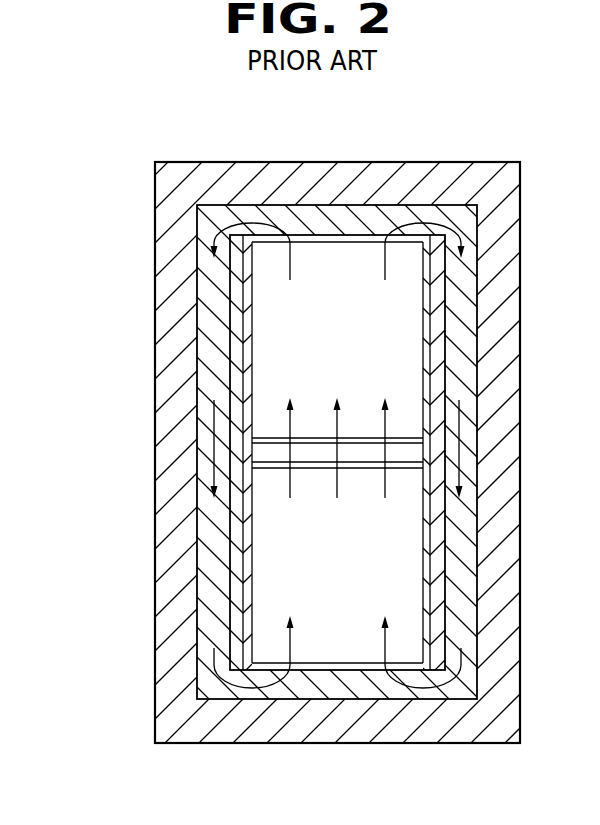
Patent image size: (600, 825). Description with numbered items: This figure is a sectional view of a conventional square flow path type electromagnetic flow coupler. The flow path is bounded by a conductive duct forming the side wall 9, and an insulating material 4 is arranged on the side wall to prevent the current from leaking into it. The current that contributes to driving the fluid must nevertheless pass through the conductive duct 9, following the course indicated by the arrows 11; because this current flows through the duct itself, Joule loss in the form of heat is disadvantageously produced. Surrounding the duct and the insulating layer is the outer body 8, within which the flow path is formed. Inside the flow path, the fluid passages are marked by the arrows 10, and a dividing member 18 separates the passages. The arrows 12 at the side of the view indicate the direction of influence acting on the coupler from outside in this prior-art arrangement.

The insulating material 4 is at (235, 337).
The outer housing block 8 is at (366, 186).
The side wall 9 is at (466, 283).
The flow channels in panel 10 is at (253, 383).
The arrows 11 is at (253, 216).
The heat input 12 is at (120, 259).
The partition shelf 18 is at (403, 453).